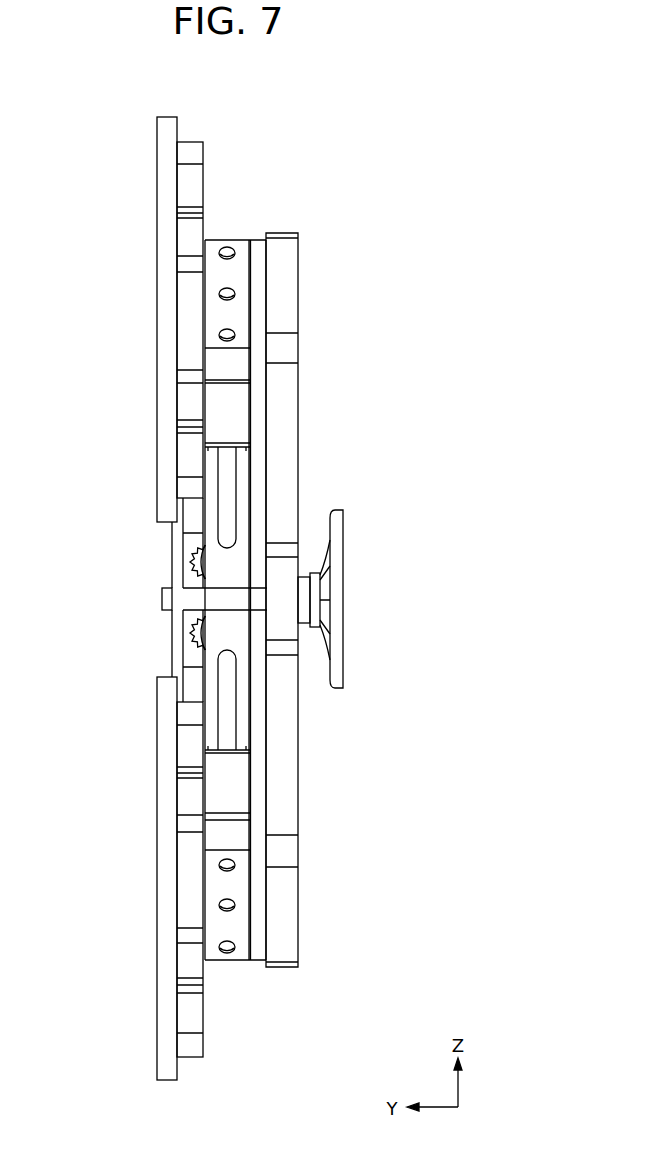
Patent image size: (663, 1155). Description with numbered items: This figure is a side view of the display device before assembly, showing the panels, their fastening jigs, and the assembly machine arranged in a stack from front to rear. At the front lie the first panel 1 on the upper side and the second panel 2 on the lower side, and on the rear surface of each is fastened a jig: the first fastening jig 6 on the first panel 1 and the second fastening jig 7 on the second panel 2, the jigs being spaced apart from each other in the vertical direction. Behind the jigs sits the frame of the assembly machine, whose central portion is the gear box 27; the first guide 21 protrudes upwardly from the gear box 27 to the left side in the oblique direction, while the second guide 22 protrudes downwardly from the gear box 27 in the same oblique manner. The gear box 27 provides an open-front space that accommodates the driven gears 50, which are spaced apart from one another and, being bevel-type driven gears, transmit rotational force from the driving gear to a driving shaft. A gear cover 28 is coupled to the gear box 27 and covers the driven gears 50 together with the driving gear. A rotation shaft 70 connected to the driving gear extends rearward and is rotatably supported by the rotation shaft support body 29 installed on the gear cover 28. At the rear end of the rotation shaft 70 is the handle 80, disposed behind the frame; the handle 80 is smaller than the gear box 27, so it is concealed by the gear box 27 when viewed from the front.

The first panel 1 is at (160, 185).
The second panel 2 is at (160, 1017).
The first fastening jig 6 is at (196, 188).
The second fastening jig 7 is at (197, 1012).
The first guide 21 is at (288, 312).
The second guide 22 is at (285, 883).
The gear box 27 is at (287, 565).
The gear cover 28 is at (170, 557).
The rotation shaft support body 29 is at (190, 614).
The driven gear 50 is at (195, 557).
The rotation shaft 70 is at (230, 600).
The handle 80 is at (343, 655).